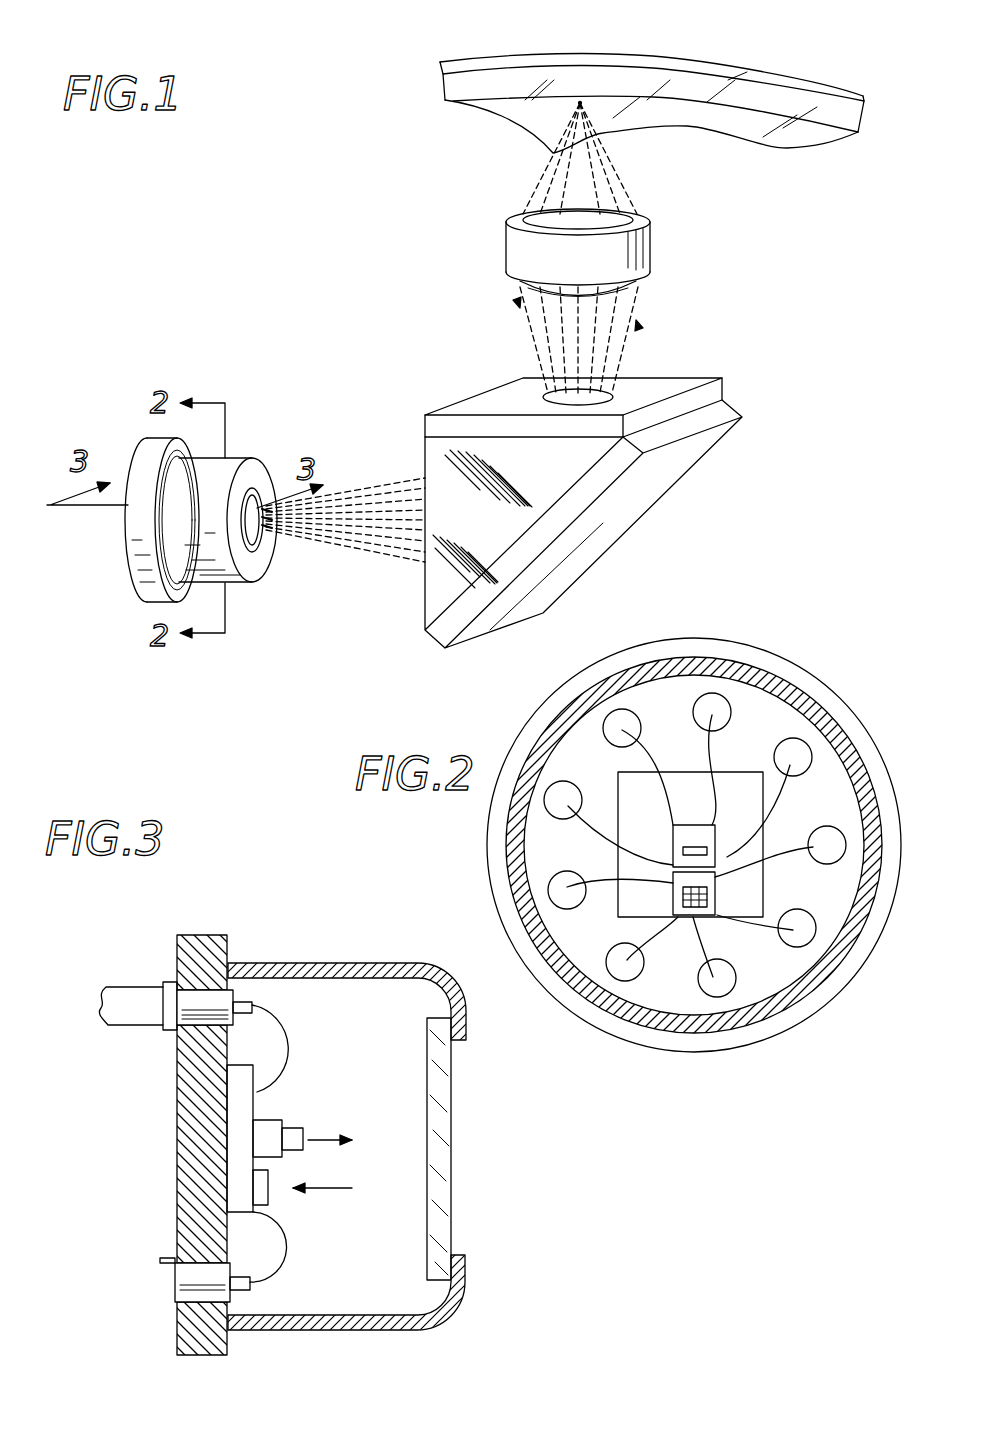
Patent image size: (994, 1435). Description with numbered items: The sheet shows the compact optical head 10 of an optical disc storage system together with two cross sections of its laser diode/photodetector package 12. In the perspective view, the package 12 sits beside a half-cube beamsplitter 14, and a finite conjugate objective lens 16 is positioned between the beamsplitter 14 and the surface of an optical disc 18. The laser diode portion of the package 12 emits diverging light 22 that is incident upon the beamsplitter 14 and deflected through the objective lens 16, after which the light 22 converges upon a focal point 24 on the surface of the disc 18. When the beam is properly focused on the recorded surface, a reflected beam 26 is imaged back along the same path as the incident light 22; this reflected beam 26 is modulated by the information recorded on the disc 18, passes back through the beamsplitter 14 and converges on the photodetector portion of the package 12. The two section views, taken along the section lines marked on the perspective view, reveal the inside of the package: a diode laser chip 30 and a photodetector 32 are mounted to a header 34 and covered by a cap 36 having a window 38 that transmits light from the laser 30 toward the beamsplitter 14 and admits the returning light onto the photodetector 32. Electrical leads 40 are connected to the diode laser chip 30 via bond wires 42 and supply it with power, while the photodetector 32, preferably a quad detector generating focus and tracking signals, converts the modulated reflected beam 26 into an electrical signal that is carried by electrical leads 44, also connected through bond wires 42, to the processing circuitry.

In FIG. 1, the optical head 10 is at (320, 172).
In FIG. 1, the laser diode/photodetector package 12 is at (140, 582).
In FIG. 1, the half-cube beamsplitter 14 is at (682, 500).
In FIG. 1, the finite conjugate objective lens 16 is at (648, 248).
In FIG. 1, the optical disc 18 is at (852, 120).
In FIG. 1, the diverging light 22 is at (383, 488).
In FIG. 1, the focal point 24 is at (580, 103).
In FIG. 1, the reflected beam 26 is at (528, 342).
In FIG. 2, the diode laser chip 30 is at (680, 837).
In FIG. 3, the diode laser chip 30 is at (275, 1122).
In FIG. 2, the photodetector 32 is at (713, 915).
In FIG. 3, the photodetector 32 is at (268, 1197).
In FIG. 3, the header 34 is at (183, 952).
In FIG. 2, the cap 36 is at (694, 845).
In FIG. 3, the cap 36 is at (312, 967).
In FIG. 3, the window 38 is at (443, 1098).
In FIG. 2, the electrical leads 40 is at (793, 760).
In FIG. 3, the electrical leads 40 is at (130, 992).
In FIG. 2, the bond wires 42 is at (658, 764).
In FIG. 3, the bond wires 42 is at (290, 1017).
In FIG. 2, the electrical leads 44 is at (567, 887).
In FIG. 3, the electrical leads 44 is at (252, 1283).